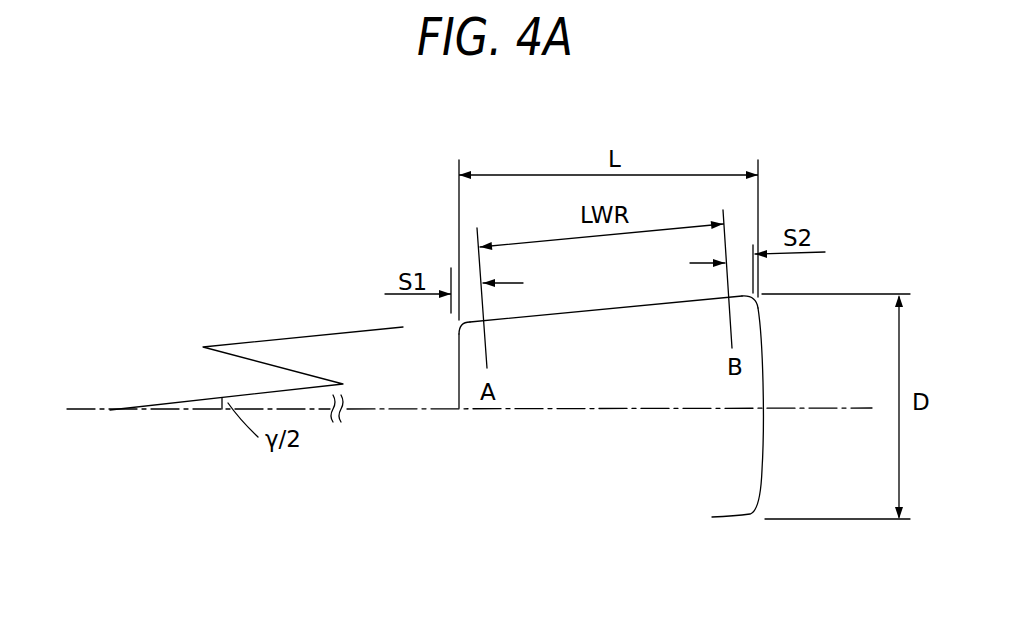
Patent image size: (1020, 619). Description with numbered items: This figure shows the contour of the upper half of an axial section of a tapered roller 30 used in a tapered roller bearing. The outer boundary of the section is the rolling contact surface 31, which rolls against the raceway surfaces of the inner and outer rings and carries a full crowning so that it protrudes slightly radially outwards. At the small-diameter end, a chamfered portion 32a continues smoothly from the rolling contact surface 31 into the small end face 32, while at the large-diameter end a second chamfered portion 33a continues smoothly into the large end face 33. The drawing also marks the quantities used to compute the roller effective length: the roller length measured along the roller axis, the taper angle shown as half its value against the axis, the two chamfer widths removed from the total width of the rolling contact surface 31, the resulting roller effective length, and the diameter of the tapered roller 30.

The tapered roller 30 is at (400, 228).
The rolling contact surface 31 is at (590, 312).
The small end face 32 is at (458, 384).
The chamfered portion 32a is at (459, 328).
The large end face 33 is at (762, 357).
The chamfered portion 33a is at (755, 297).